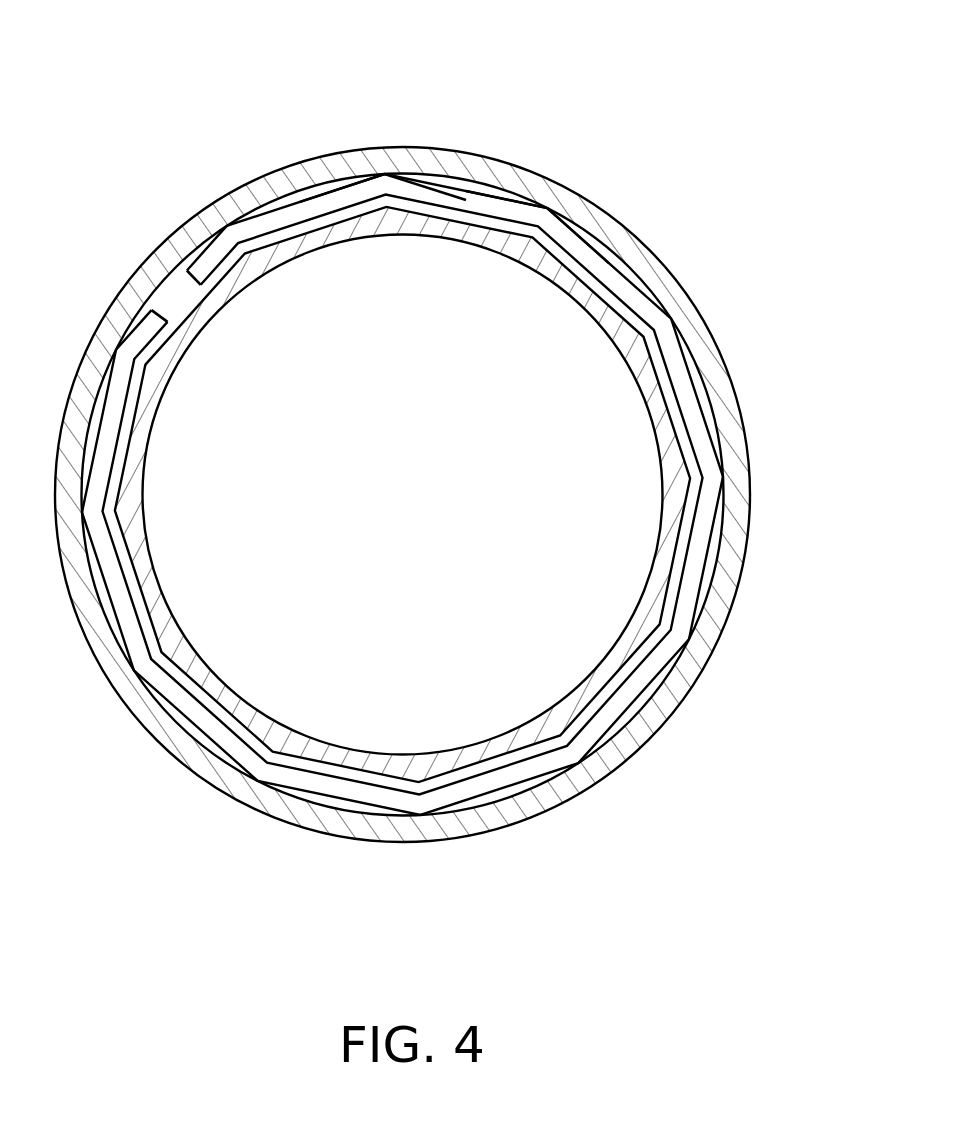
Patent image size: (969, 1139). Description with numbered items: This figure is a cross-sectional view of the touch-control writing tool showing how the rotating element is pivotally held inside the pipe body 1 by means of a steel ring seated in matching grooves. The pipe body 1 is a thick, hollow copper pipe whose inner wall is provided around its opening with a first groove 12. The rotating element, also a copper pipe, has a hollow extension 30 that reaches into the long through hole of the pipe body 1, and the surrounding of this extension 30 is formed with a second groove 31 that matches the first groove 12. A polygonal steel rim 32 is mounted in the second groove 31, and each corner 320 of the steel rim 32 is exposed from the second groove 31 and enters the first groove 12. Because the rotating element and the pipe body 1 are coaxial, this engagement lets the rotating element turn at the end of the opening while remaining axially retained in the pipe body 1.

The pipe body 1 is at (247, 196).
The first groove 12 is at (174, 271).
The extension 30 is at (455, 228).
The second groove 31 is at (548, 208).
The polygonal steel rim 32 is at (313, 207).
The corner 320 is at (385, 174).